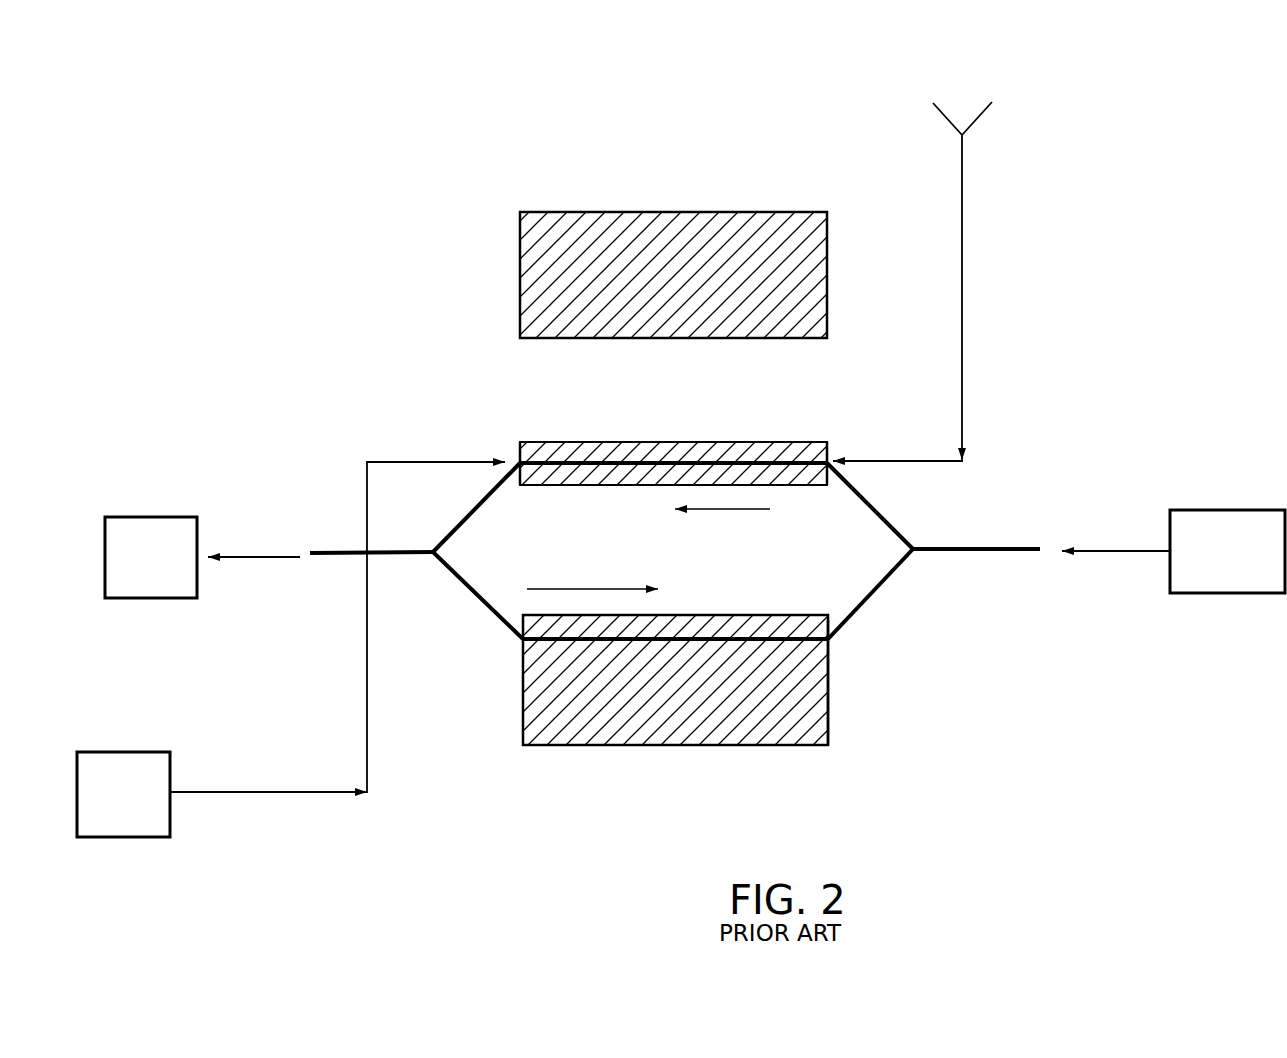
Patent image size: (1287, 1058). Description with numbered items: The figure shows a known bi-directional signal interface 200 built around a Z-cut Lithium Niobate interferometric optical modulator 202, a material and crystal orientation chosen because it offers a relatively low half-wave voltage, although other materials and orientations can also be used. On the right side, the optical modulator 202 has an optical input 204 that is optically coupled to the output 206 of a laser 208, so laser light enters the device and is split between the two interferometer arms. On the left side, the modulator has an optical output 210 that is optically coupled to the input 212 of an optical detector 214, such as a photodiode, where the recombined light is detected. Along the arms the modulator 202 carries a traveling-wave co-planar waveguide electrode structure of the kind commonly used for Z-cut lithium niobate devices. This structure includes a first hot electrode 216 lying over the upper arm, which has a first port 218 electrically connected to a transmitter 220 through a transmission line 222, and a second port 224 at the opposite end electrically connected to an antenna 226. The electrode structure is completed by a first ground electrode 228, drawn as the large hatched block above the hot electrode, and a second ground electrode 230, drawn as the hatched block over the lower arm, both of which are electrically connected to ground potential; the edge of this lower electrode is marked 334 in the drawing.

The bi-directional signal interface 200 is at (1185, 138).
The interferometric optical modulator 202 is at (362, 230).
The optical input 204 is at (916, 551).
The output 206 is at (1168, 553).
The laser 208 is at (1210, 510).
The optical output 210 is at (433, 555).
The input 212 is at (200, 560).
The optical detector 214 is at (152, 515).
The first hot electrode 216 is at (670, 442).
The first port 218 is at (518, 460).
The transmitter 220 is at (125, 840).
The transmission line 222 is at (365, 678).
The second port 224 is at (834, 458).
The antenna 226 is at (988, 110).
The first ground electrode 228 is at (672, 212).
The second ground electrode 230 is at (675, 750).
The transmit electrode edge 334 is at (834, 644).